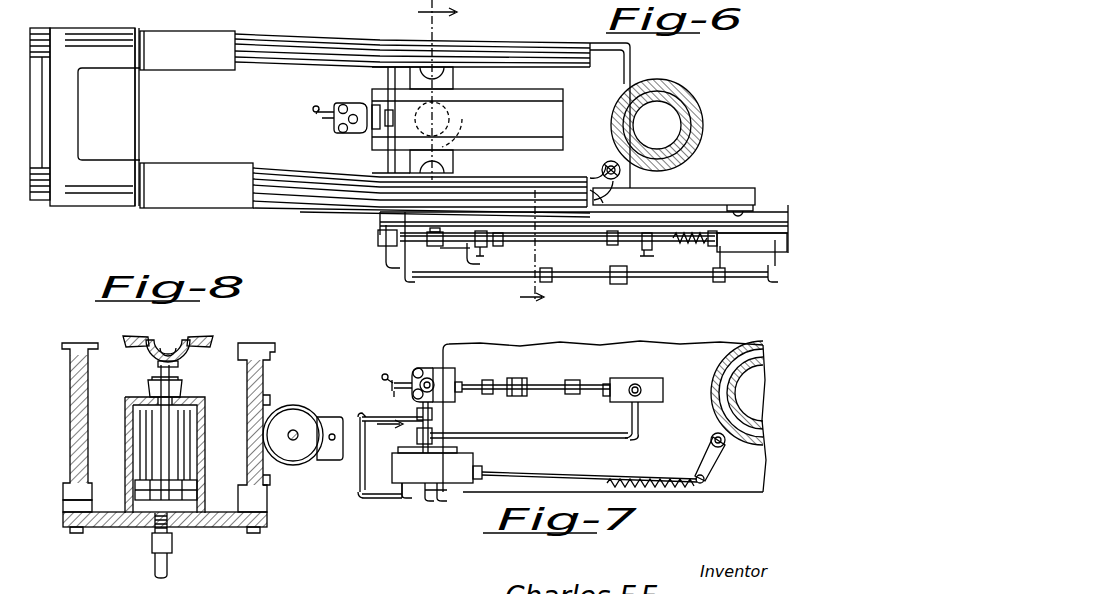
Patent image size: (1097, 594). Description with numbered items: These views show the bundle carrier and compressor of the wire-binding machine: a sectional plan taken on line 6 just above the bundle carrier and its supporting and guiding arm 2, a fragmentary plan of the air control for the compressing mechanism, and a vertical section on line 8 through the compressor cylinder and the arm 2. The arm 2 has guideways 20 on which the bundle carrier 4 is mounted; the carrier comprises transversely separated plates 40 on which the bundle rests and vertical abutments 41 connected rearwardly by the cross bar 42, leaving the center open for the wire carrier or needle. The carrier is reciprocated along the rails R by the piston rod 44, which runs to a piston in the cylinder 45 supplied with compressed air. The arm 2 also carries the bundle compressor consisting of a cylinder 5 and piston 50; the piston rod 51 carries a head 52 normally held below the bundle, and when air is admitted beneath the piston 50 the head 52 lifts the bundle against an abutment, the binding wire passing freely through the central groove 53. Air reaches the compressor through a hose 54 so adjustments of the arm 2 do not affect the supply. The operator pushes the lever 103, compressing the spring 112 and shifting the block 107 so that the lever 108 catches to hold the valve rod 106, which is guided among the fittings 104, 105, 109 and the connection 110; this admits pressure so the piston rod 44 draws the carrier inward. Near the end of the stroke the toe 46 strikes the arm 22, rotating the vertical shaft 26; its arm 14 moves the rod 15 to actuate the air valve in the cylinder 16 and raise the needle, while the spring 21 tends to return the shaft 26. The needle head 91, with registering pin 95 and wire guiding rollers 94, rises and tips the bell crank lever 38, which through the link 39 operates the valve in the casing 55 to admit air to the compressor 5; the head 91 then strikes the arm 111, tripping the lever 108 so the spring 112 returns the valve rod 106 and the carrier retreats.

In FIG. 6, the vertical abutment 41 is at (170, 23).
In FIG. 6, the rail R is at (366, 41).
In FIG. 8, the rail R is at (73, 427).
In FIG. 6, the section line 8 is at (481, 161).
In FIG. 7, the section line 8 is at (532, 315).
In FIG. 6, the transversely separated plate 40 is at (213, 66).
In FIG. 6, the guideway 20 is at (306, 50).
In FIG. 8, the guideway 20 is at (79, 346).
In FIG. 6, the head 91 is at (353, 106).
In FIG. 7, the head 91 is at (411, 370).
In FIG. 6, the head 52 is at (467, 119).
In FIG. 8, the head 52 is at (137, 345).
In FIG. 6, the cross bar 42 is at (70, 116).
In FIG. 6, the bundle carrier 4 is at (102, 150).
In FIG. 6, the arm 111 is at (380, 140).
In FIG. 6, the connector 110 is at (385, 163).
In FIG. 6, the compressor cylinder 5 is at (462, 128).
In FIG. 8, the compressor cylinder 5 is at (205, 431).
In FIG. 6, the shaft 26 is at (611, 160).
In FIG. 7, the shaft 26 is at (711, 441).
In FIG. 6, the arm 22 is at (596, 180).
In FIG. 6, the cylinder 45 is at (655, 216).
In FIG. 8, the cylinder 45 is at (300, 467).
In FIG. 6, the spring 112 is at (708, 231).
In FIG. 6, the toe 46 is at (253, 208).
In FIG. 6, the piston rod 44 is at (307, 209).
In FIG. 8, the piston rod 44 is at (300, 430).
In FIG. 6, the fitting 109 is at (381, 248).
In FIG. 6, the fitting 105 is at (447, 244).
In FIG. 6, the block 107 is at (490, 245).
In FIG. 6, the valve rod 106 is at (572, 239).
In FIG. 7, the valve rod 106 is at (331, 421).
In FIG. 6, the cylinder 104 is at (752, 251).
In FIG. 6, the lever 108 is at (470, 250).
In FIG. 6, the lever 103 is at (603, 247).
In FIG. 8, the central groove 53 is at (186, 348).
In FIG. 8, the arm 2 is at (259, 394).
In FIG. 8, the piston rod 51 is at (161, 432).
In FIG. 8, the piston 50 is at (196, 491).
In FIG. 8, the hose 54 is at (168, 553).
In FIG. 7, the section line 6 is at (383, 375).
In FIG. 7, the registering pin 95 is at (419, 368).
In FIG. 7, the bell crank lever 38 is at (480, 383).
In FIG. 7, the link 39 is at (540, 376).
In FIG. 7, the valve casing 55 is at (652, 376).
In FIG. 7, the wire guiding roller 94 is at (392, 387).
In FIG. 7, the arm 14 is at (721, 461).
In FIG. 7, the rod 15 is at (599, 478).
In FIG. 7, the cylinder 16 is at (452, 484).
In FIG. 7, the spring 21 is at (666, 488).